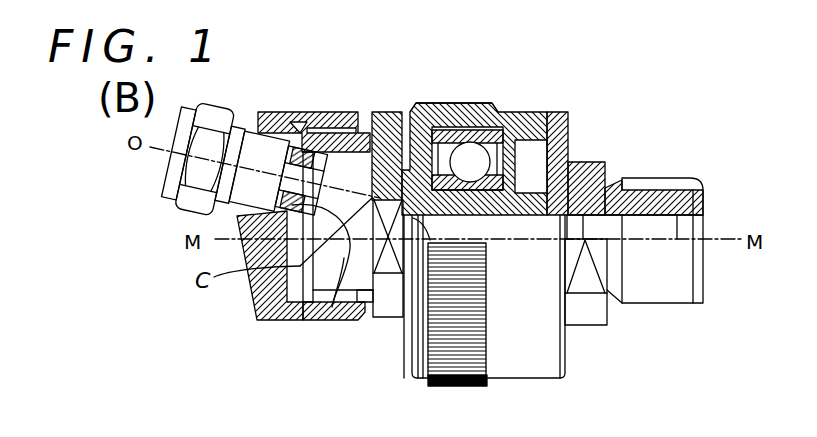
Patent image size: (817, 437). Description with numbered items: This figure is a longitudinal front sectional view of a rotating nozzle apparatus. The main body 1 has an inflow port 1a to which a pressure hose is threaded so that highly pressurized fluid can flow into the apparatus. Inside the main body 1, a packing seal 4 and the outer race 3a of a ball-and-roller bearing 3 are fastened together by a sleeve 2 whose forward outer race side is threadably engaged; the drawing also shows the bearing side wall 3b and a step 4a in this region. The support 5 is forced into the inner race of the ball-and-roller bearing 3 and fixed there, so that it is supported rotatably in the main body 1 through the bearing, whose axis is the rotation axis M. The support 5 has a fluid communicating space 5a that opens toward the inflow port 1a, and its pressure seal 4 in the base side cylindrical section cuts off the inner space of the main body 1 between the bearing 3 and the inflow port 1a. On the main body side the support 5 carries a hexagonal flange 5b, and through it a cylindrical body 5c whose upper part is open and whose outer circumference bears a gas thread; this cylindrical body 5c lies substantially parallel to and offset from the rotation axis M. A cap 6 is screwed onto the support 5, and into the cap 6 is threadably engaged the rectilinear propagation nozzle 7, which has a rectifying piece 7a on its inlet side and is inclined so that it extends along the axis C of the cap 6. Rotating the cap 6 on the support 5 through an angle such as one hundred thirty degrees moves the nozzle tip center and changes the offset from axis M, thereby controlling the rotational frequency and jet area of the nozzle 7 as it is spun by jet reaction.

The main body 1 is at (653, 193).
The main body inflow port 1a is at (688, 227).
The sleeve 2 is at (537, 340).
The ball-and-roller bearing 3 is at (473, 105).
The outer race 3a is at (433, 110).
The housing side wall 3b is at (402, 110).
The packing seal 4 is at (548, 107).
The step of end plate 4a is at (583, 160).
The support 5 is at (355, 284).
The fluid communicating space 5a is at (305, 321).
The hexagonal flange 5b is at (393, 311).
The cylindrical body 5c is at (338, 113).
The cap 6 is at (245, 307).
The rectilinear propagation nozzle 7 is at (162, 194).
The rectifying piece 7a is at (280, 113).